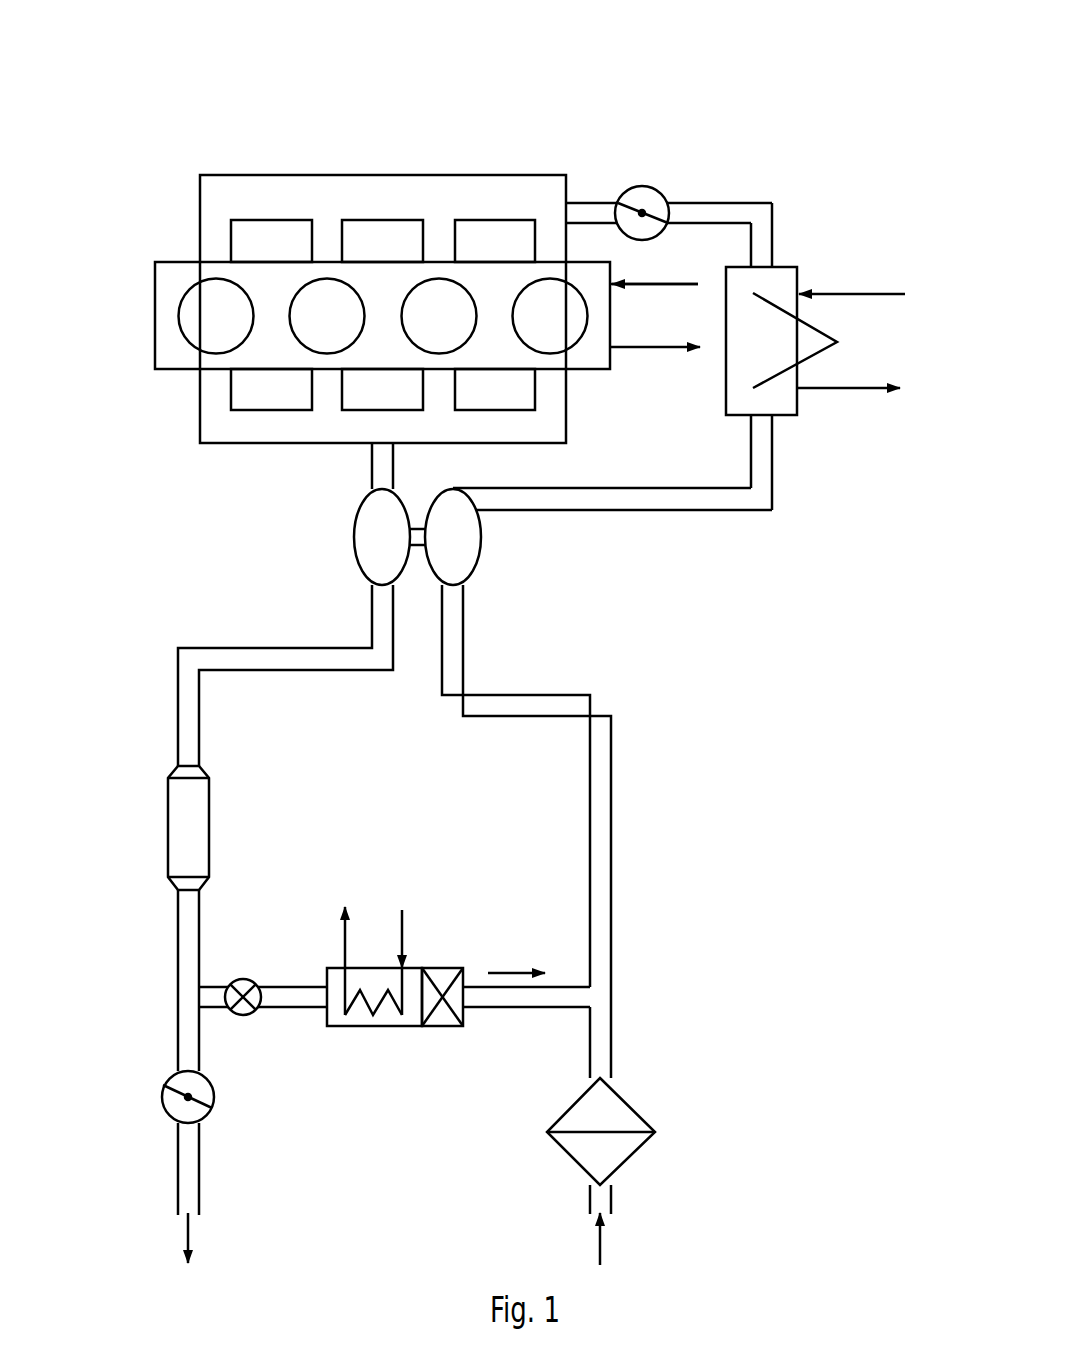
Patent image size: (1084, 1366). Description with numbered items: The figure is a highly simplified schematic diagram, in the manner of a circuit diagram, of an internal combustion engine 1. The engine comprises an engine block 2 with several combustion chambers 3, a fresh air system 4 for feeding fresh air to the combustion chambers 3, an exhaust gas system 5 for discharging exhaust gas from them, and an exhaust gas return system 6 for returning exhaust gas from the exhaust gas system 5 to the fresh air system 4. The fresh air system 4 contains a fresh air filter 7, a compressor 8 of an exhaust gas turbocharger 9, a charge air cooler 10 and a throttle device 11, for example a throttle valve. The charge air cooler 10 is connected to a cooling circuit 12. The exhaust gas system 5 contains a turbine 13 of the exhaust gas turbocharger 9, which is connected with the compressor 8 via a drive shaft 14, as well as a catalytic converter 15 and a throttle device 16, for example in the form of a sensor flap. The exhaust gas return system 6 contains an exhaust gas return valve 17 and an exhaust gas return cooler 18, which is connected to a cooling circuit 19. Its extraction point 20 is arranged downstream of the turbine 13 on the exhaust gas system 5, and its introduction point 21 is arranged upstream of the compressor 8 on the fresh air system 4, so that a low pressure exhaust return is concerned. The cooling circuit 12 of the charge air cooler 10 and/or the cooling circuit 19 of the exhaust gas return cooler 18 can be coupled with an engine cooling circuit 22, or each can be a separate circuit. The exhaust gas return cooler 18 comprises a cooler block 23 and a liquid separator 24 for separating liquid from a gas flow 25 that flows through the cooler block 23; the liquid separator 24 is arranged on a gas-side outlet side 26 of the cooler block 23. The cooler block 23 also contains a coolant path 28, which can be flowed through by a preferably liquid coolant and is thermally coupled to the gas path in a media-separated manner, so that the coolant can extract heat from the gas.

The internal combustion engine 1 is at (865, 170).
The engine block 2 is at (177, 260).
The combustion chambers 3 is at (383, 316).
The fresh air system 4 is at (583, 925).
The exhaust gas system 5 is at (226, 924).
The exhaust gas return system 6 is at (525, 1010).
The fresh air filter 7 is at (635, 1100).
The compressor 8 is at (467, 537).
The exhaust gas turbocharger 9 is at (401, 538).
The charge air cooler 10 is at (800, 370).
The throttle device 11 is at (640, 186).
The cooling circuit 12 is at (852, 292).
The turbine 13 is at (368, 537).
The drive shaft 14 is at (418, 545).
The catalytic converter 15 is at (188, 827).
The throttle device 16 is at (162, 1097).
The exhaust gas return valve 17 is at (243, 978).
The exhaust gas return cooler 18 is at (386, 998).
The cooling circuit 19 is at (343, 942).
The extraction point 20 is at (212, 950).
The introduction point 21 is at (577, 943).
The engine cooling circuit 22 is at (653, 350).
The cooler block 23 is at (358, 1028).
The liquid separator 24 is at (443, 968).
The gas flow 25 is at (508, 968).
The gas-side outlet side 26 is at (425, 1000).
The coolant path 28 is at (388, 1012).